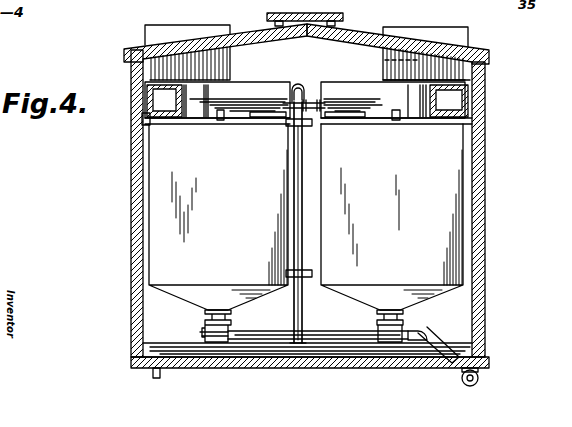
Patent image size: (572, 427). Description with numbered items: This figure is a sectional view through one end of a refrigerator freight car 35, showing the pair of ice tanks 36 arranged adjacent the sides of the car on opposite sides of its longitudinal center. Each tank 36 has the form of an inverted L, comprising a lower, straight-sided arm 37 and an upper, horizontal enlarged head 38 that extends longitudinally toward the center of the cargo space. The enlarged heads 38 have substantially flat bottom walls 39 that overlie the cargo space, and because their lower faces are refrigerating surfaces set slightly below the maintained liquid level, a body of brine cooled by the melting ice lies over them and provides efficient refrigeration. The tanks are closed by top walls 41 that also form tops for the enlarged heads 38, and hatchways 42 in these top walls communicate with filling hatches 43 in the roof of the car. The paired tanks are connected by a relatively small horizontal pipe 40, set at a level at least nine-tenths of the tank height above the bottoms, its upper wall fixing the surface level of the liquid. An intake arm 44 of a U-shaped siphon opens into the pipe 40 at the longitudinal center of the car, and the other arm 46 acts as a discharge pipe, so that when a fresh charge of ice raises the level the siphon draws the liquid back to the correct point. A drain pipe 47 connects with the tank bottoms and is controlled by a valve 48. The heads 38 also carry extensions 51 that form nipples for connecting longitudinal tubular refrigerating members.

The freight car 35 is at (482, 117).
The tank 36 is at (268, 95).
The lower straight-sided arm 37 is at (162, 167).
The enlarged head 38 is at (258, 118).
The bottom wall 39 is at (236, 120).
The horizontal pipe 40 is at (309, 115).
The top wall 41 is at (339, 82).
The hatchway 42 is at (386, 77).
The filling hatch 43 is at (231, 52).
The intake arm 44 is at (306, 100).
The siphon discharge arm 46 is at (302, 205).
The drain pipe 47 is at (326, 333).
The valve 48 is at (480, 368).
The extension 51 is at (171, 121).